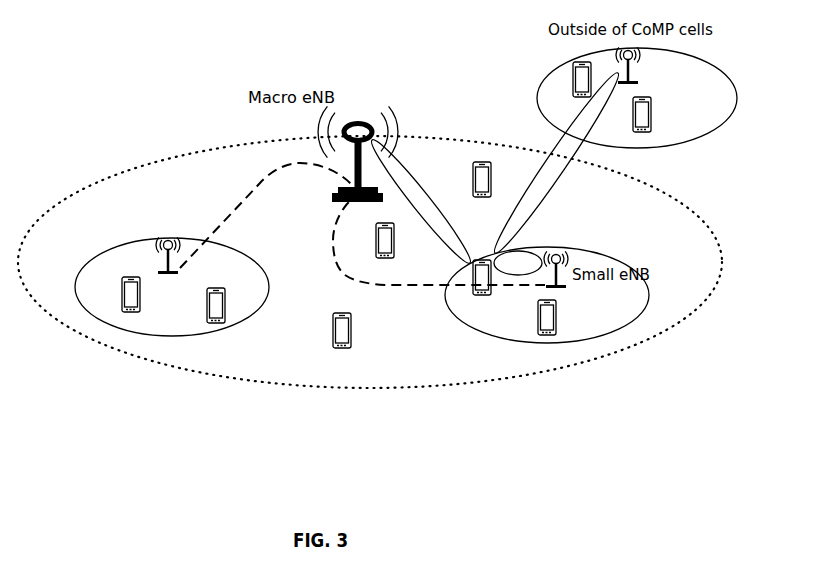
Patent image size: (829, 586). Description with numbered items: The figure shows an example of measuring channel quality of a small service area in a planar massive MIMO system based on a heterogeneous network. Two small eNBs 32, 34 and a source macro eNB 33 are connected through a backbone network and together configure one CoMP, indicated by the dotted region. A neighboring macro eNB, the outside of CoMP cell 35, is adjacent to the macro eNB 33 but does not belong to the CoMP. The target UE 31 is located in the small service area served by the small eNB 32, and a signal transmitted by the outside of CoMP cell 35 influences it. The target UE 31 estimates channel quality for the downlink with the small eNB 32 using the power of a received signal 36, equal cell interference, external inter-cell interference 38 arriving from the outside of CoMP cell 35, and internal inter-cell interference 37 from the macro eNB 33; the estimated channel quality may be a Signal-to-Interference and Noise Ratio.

The target UE 31 is at (483, 297).
The small eNB 32 is at (556, 252).
The macro eNB 33 is at (359, 120).
The small eNB 34 is at (167, 238).
The outside of CoMP cell 35 is at (637, 73).
The received signal 36 is at (520, 276).
The internal inter-cell interference 37 is at (426, 189).
The external inter-cell interference 38 is at (575, 170).